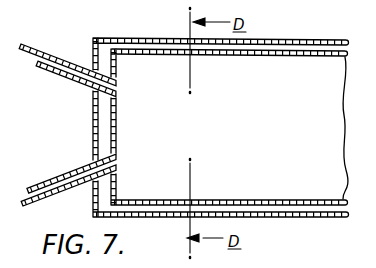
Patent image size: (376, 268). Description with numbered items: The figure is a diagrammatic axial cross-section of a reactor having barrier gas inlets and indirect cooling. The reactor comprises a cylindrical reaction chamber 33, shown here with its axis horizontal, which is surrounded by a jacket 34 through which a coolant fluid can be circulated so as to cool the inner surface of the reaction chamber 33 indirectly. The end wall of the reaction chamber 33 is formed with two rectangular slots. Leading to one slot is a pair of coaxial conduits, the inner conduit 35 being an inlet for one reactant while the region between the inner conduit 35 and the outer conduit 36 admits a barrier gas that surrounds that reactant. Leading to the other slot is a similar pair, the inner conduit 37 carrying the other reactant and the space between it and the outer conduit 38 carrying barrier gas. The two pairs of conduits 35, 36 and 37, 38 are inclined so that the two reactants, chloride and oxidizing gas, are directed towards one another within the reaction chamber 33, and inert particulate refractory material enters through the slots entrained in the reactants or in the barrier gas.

The reaction chamber 33 is at (288, 55).
The jacket 34 is at (338, 35).
The inner conduit 35 is at (39, 47).
The outer conduit 36 is at (66, 57).
The inner conduit 37 is at (27, 194).
The outer conduit 38 is at (66, 170).